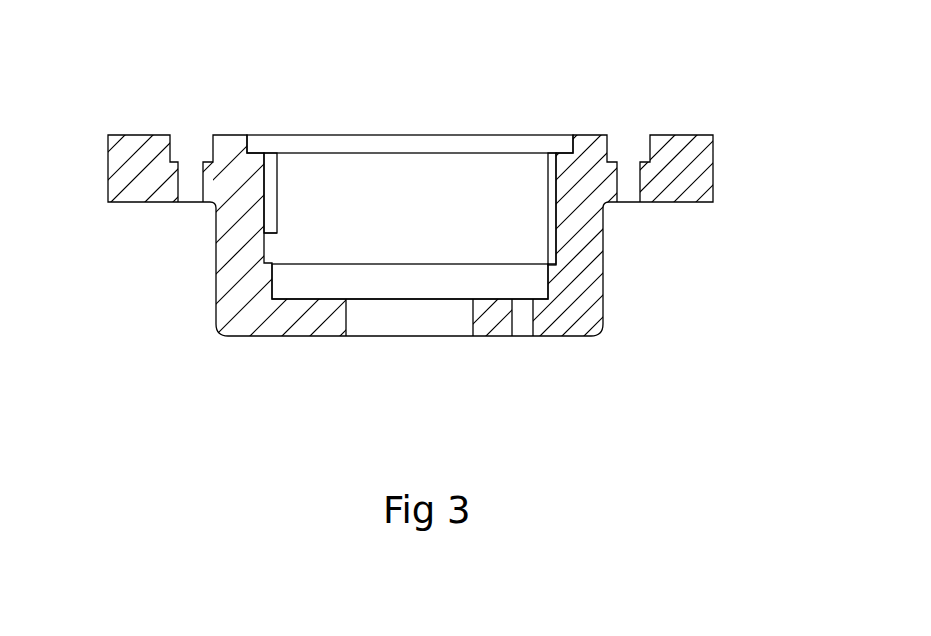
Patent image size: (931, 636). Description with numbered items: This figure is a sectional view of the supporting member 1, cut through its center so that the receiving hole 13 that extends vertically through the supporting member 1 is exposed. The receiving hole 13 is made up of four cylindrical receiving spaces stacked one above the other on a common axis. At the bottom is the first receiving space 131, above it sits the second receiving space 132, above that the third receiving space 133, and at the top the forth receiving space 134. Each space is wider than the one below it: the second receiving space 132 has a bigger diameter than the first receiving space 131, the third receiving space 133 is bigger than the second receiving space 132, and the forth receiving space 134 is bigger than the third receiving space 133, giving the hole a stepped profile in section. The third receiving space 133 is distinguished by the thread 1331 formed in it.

The supporting member 1 is at (118, 82).
The receiving hole 13 is at (806, 131).
The first receiving space 131 is at (442, 313).
The second receiving space 132 is at (447, 277).
The third receiving space 133 is at (480, 220).
The thread 1331 is at (275, 195).
The forth receiving space 134 is at (510, 147).